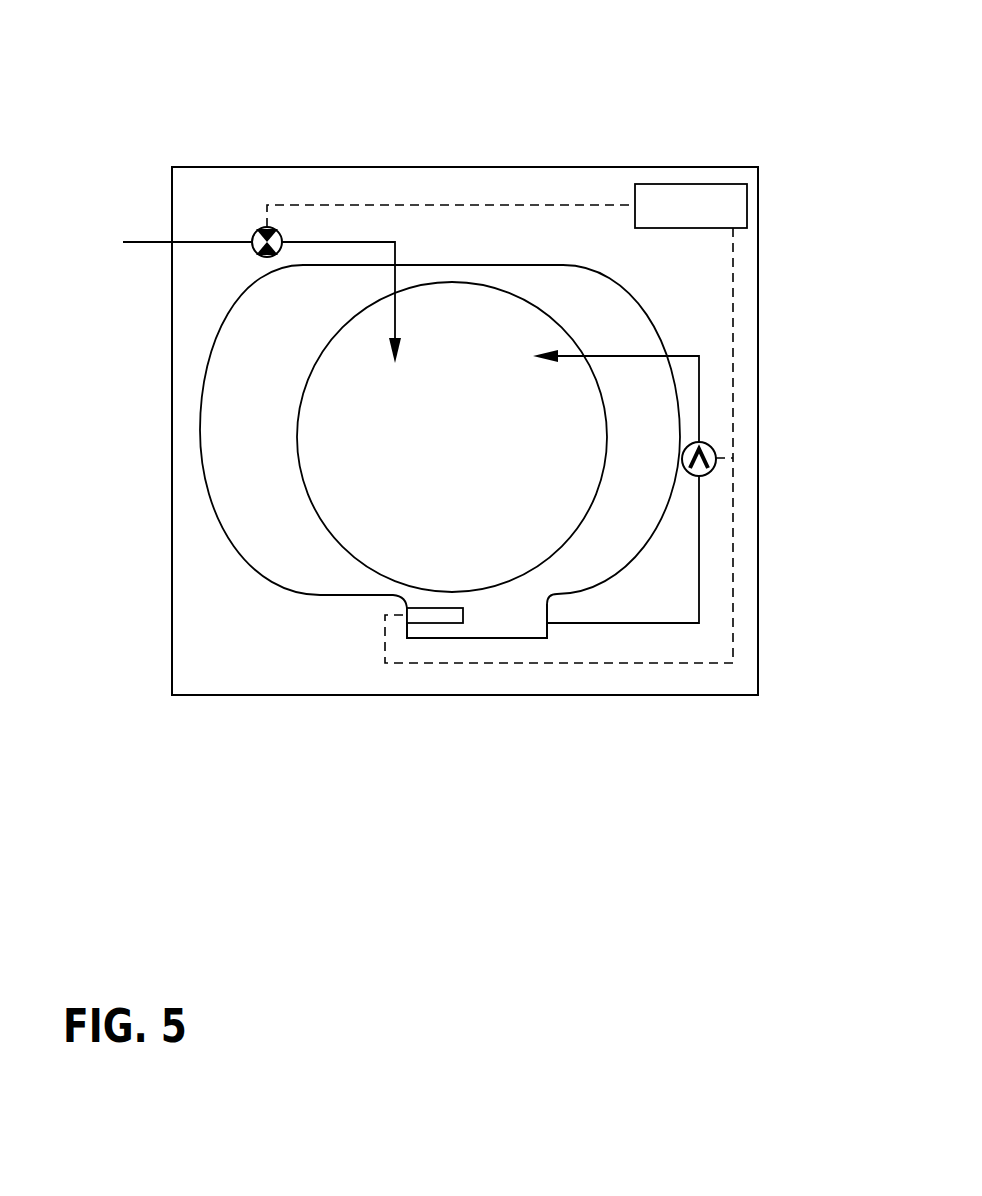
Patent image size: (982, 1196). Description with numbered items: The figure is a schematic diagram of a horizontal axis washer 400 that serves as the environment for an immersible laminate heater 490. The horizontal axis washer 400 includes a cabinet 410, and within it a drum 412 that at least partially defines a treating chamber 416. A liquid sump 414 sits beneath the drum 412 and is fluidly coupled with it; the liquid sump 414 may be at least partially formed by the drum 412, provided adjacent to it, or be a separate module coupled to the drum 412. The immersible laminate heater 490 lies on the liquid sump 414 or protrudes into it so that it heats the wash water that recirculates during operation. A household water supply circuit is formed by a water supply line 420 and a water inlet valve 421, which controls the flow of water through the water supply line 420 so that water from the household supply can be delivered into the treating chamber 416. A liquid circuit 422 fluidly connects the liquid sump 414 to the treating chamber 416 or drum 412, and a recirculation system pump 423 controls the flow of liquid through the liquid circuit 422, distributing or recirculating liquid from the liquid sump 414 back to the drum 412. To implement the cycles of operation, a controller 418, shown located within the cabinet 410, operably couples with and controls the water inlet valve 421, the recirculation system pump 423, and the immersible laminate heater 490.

The horizontal axis washer 400 is at (510, 39).
The cabinet 410 is at (607, 167).
The drum 412 is at (650, 402).
The liquid sump 414 is at (522, 638).
The treating chamber 416 is at (452, 437).
The controller 418 is at (747, 205).
The water supply line 420 is at (150, 242).
The water inlet valve 421 is at (262, 232).
The liquid circuit 422 is at (673, 540).
The recirculation system pump 423 is at (709, 445).
The immersible laminate heater 490 is at (435, 623).